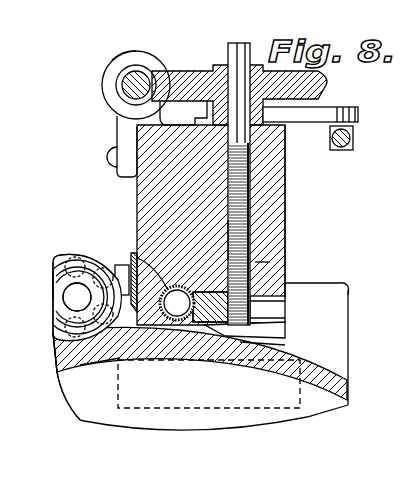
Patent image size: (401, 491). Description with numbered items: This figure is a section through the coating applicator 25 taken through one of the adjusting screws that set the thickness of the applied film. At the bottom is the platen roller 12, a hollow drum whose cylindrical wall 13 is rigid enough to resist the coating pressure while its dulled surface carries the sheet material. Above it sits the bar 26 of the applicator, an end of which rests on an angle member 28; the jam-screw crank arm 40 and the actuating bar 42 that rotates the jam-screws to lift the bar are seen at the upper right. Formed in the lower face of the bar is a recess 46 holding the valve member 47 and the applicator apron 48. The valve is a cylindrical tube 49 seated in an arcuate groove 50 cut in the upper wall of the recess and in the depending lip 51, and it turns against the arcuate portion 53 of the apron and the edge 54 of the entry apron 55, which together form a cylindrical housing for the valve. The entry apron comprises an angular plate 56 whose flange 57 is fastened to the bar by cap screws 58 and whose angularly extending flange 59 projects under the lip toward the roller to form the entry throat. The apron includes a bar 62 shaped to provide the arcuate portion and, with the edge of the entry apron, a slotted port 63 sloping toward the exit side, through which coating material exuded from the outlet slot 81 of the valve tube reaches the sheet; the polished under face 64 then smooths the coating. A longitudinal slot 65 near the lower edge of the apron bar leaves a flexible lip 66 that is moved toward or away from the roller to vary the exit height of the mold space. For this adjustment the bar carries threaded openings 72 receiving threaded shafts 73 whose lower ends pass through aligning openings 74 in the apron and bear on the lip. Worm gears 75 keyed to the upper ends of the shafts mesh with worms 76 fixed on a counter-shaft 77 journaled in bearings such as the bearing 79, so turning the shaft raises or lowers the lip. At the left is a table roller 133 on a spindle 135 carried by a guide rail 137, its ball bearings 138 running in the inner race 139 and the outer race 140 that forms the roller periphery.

The platen roller 12 is at (350, 370).
The cylindrical wall 13 is at (349, 392).
The coating applicator 25 is at (137, 233).
The bar 26 is at (286, 197).
The angle member 28 is at (203, 412).
The crank arm 40 is at (370, 95).
The actuating bar 42 is at (353, 140).
The recess 46 is at (177, 323).
The valve member 47 is at (178, 323).
The applicator apron 48 is at (267, 309).
The cylindrical tube 49 is at (179, 323).
The arcuate groove 50 is at (135, 262).
The depending lip 51 is at (176, 323).
The arcuate portion 53 is at (207, 325).
The edge 54 is at (176, 323).
The entry apron 55 is at (95, 364).
The angular plate 56 is at (87, 297).
The flange 57 is at (96, 258).
The cap screws 58 is at (118, 268).
The angularly extending flange 59 is at (109, 370).
The bar 62 is at (286, 298).
The slotted port 63 is at (200, 340).
The under face 64 is at (255, 350).
The longitudinal slot 65 is at (286, 320).
The flexible lip 66 is at (287, 330).
The threaded openings 72 is at (250, 238).
The threaded shafts 73 is at (250, 220).
The aligning openings 74 is at (268, 265).
The worm gears 75 is at (196, 71).
The worms 76 is at (118, 78).
The counter-shaft 77 is at (126, 86).
The bearing 79 is at (113, 60).
The outlet slot 81 is at (177, 303).
The roller 133 is at (55, 260).
The spindle 135 is at (63, 298).
The guide rail 137 is at (55, 343).
The ball bearings 138 is at (62, 276).
The race 139 is at (58, 312).
The race 140 is at (58, 255).